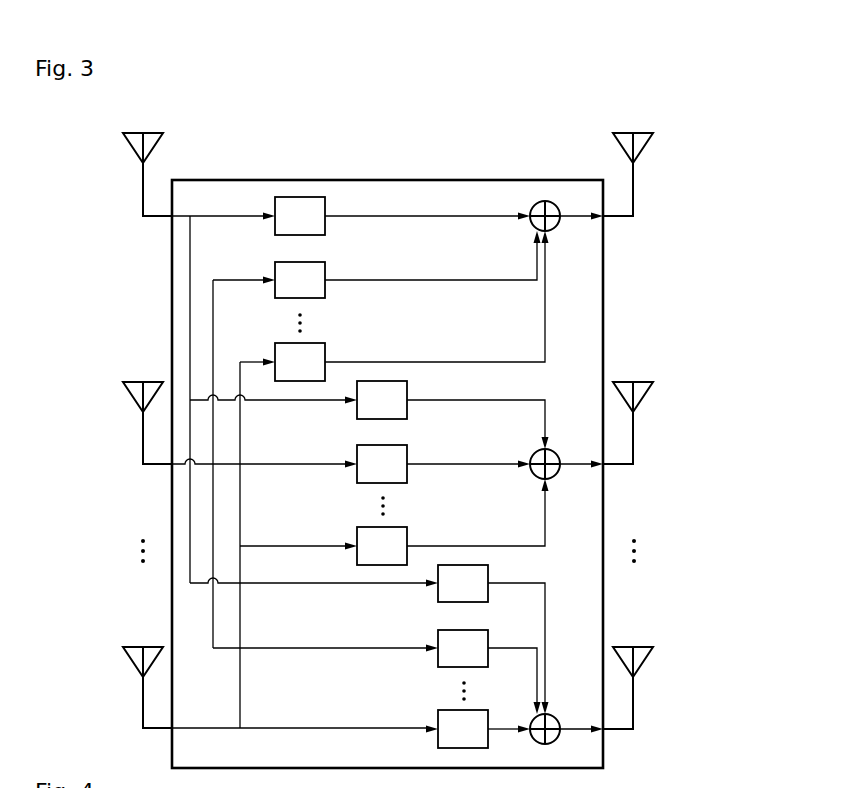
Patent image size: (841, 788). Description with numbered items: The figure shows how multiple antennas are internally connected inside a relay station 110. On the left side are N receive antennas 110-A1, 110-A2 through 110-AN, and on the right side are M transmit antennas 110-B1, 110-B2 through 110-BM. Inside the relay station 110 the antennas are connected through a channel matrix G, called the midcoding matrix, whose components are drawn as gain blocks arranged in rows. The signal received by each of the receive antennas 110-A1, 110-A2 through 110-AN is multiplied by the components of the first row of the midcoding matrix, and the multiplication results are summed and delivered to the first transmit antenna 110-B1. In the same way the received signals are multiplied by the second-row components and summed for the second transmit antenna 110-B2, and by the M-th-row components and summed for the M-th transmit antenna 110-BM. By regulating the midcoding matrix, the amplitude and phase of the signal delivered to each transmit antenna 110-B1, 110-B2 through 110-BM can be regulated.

The relay station (RS) 110 is at (535, 180).
The first Rx antenna 110-A1 is at (143, 188).
The second Rx antenna 110-A2 is at (143, 435).
The N-th Rx antenna 110-AN is at (143, 700).
The first Tx antenna 110-B1 is at (633, 187).
The second Tx antenna 110-B2 is at (633, 434).
The M-th Tx antenna 110-BM is at (633, 699).